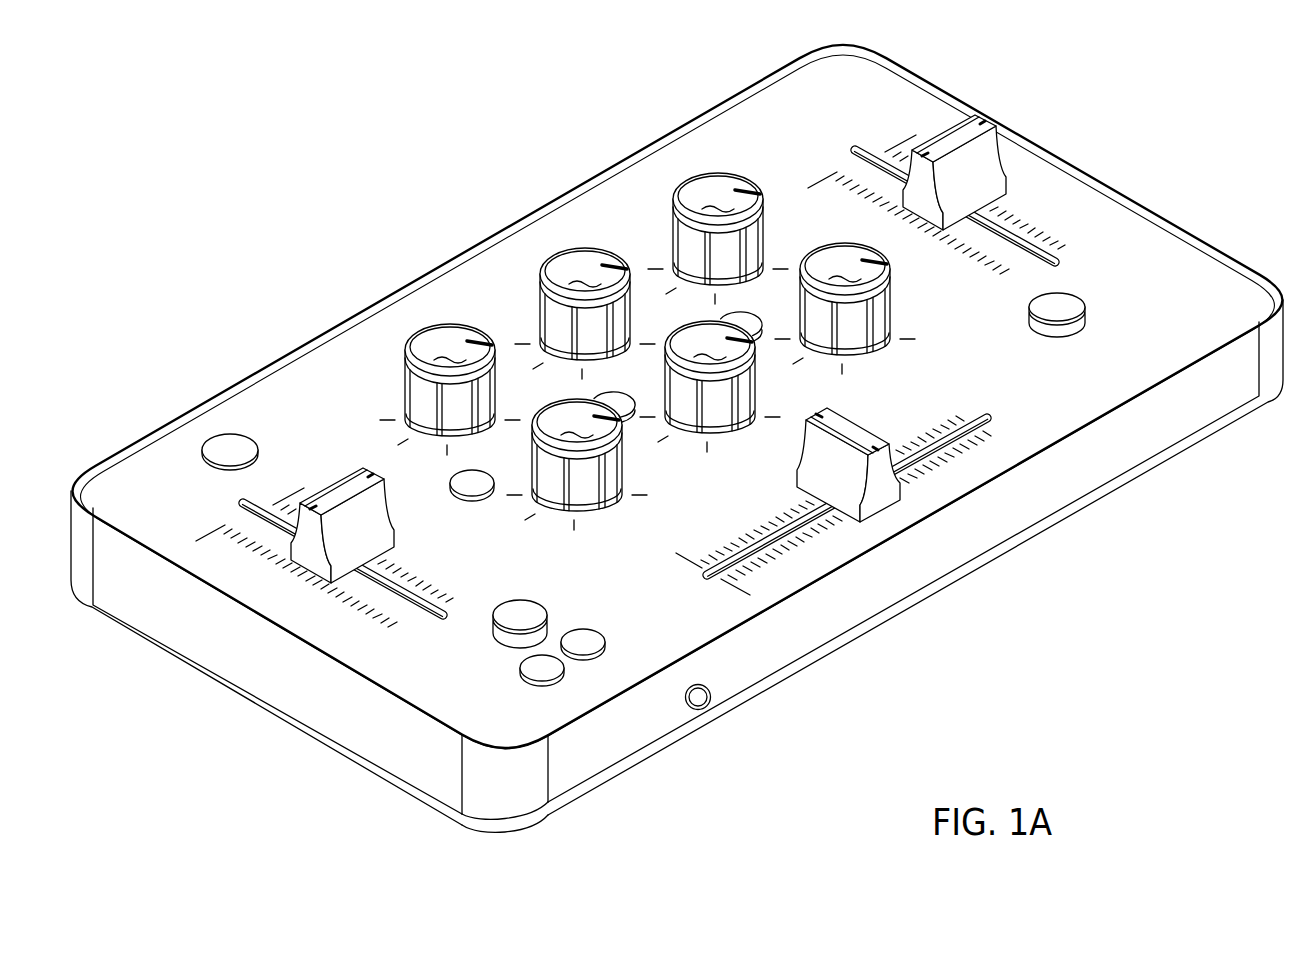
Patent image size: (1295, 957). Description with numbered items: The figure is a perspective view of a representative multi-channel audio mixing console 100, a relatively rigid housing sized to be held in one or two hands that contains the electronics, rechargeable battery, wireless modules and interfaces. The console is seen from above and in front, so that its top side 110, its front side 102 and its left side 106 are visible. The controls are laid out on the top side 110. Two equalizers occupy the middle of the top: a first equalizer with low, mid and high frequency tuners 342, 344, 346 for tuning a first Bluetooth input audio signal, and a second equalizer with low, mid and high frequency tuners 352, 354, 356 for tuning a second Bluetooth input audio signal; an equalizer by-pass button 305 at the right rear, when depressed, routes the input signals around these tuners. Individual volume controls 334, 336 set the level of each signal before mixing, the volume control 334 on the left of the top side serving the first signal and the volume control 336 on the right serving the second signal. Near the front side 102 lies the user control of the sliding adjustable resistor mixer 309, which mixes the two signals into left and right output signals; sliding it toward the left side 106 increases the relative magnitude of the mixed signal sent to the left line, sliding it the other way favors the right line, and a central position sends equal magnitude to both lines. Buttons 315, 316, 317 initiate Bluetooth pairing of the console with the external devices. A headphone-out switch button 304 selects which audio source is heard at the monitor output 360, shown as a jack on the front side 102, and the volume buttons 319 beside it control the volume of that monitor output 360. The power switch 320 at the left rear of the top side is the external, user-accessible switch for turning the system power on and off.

The multi-channel audio mixing console 100 is at (677, 439).
The front side 102 is at (677, 562).
The left side 106 is at (383, 735).
The top side 110 is at (1181, 265).
The headphone-out switch button 304 is at (528, 612).
The equalizer by-pass button 305 is at (1058, 311).
The sliding adjustable resistor mixer 309 is at (888, 489).
The button 315 is at (473, 483).
The button 316 is at (612, 404).
The button 317 is at (742, 328).
The volume buttons 319 is at (547, 668).
The power switch 320 is at (232, 449).
The volume control 334 is at (374, 512).
The volume control 336 is at (950, 140).
The low frequency tuner 342 is at (450, 391).
The mid frequency tuner 344 is at (585, 314).
The high frequency tuner 346 is at (718, 241).
The low frequency tuner 352 is at (577, 466).
The mid frequency tuner 354 is at (710, 387).
The high frequency tuner 356 is at (845, 311).
The monitor output 360 is at (712, 698).